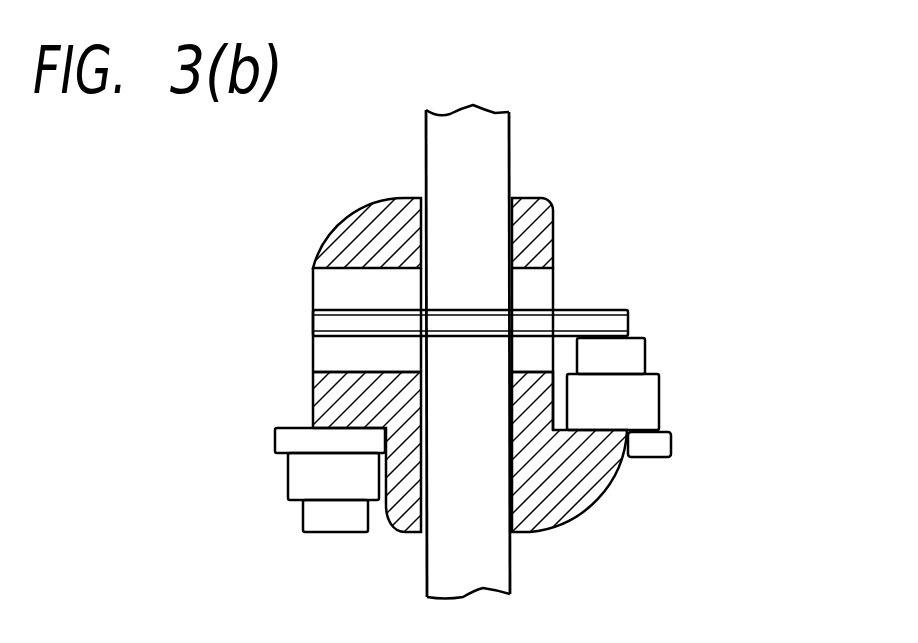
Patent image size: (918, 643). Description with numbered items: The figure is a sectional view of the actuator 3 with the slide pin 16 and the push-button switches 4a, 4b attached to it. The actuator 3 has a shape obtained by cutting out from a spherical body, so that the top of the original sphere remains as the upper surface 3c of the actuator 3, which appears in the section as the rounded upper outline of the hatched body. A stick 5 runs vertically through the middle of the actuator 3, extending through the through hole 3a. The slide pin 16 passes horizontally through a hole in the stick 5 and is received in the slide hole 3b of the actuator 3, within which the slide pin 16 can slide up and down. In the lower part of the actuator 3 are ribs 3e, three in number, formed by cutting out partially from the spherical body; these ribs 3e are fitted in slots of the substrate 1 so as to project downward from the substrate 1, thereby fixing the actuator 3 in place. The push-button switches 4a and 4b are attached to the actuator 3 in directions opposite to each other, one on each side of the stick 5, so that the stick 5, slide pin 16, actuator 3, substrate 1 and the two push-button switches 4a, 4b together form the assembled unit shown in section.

The actuator 3 is at (458, 360).
The through hole 3a is at (512, 197).
The slide hole 3b is at (325, 285).
The upper surface 3c is at (368, 235).
The ribs 3e is at (577, 485).
The stick 5 is at (487, 148).
The slide pin 16 is at (605, 320).
The push-button switch 4a is at (638, 395).
The push-button switch 4b is at (298, 493).
The substrate 1 is at (275, 442).